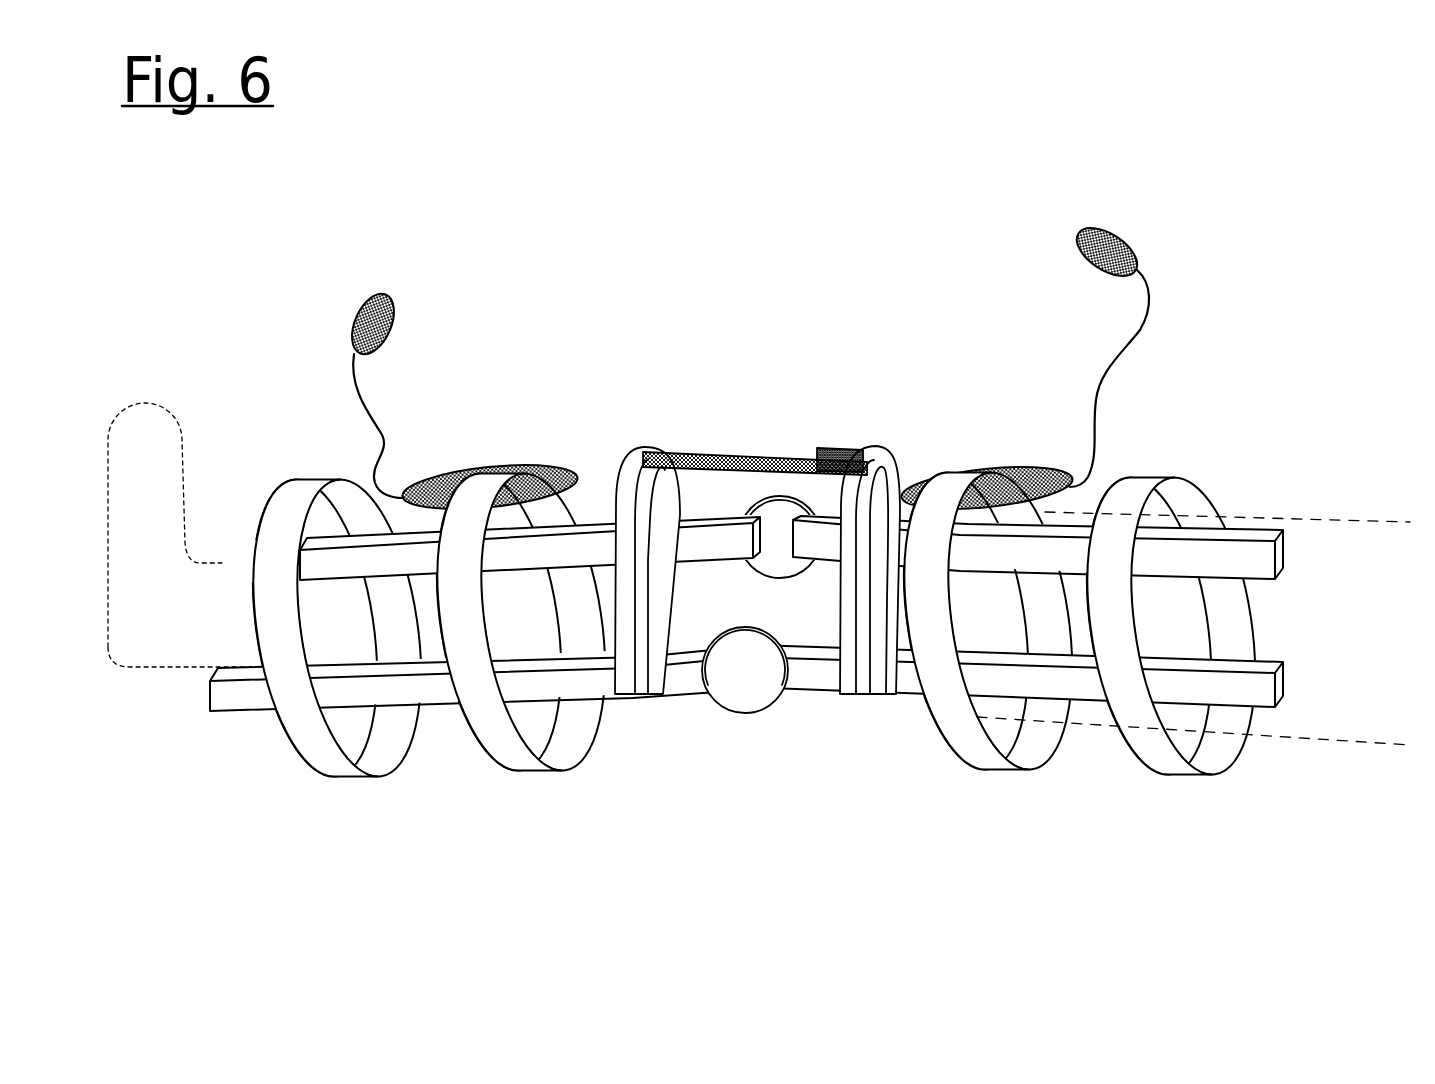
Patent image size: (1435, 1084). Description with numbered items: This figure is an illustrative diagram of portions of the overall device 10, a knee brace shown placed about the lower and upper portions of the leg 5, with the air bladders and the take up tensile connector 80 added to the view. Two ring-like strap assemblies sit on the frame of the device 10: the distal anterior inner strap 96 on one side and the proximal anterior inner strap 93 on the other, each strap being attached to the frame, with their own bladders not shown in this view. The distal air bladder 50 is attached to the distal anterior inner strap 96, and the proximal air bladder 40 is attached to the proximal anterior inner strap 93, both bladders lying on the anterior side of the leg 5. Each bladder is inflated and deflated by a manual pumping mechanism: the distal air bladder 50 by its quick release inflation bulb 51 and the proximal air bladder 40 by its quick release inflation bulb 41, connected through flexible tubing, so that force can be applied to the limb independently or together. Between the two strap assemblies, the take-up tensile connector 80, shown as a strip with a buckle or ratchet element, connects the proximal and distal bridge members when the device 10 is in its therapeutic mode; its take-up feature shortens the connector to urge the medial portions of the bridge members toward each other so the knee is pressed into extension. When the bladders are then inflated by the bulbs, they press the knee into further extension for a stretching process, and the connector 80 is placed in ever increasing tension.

The leg 5 is at (237, 180).
The overall device 10 is at (1347, 92).
The proximal air bladder 40 is at (1050, 351).
The inflation bulb 41 is at (1015, 230).
The distal air bladder 50 is at (627, 340).
The inflation bulb 51 is at (522, 226).
The take-up tensile connector 80 is at (828, 291).
The proximal anterior inner strap 93 is at (932, 640).
The distal anterior inner strap 96 is at (462, 648).